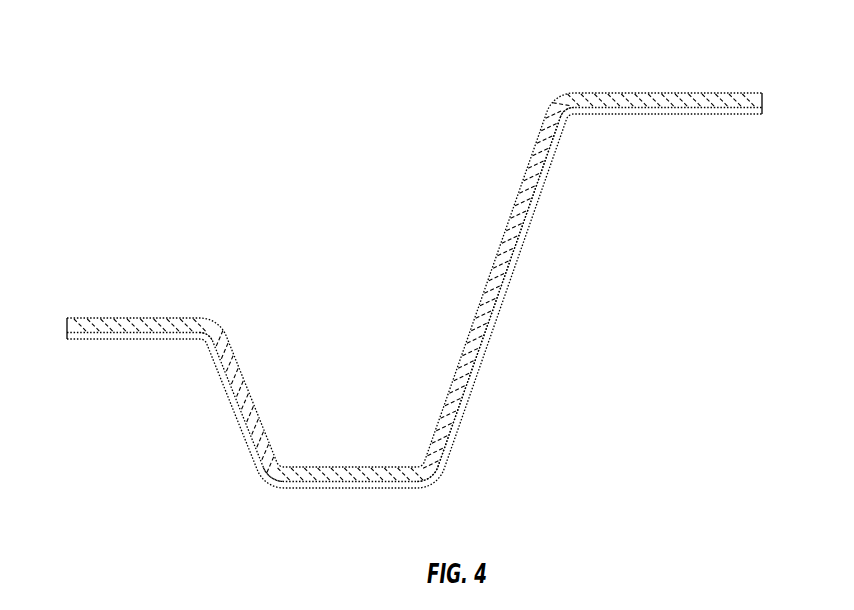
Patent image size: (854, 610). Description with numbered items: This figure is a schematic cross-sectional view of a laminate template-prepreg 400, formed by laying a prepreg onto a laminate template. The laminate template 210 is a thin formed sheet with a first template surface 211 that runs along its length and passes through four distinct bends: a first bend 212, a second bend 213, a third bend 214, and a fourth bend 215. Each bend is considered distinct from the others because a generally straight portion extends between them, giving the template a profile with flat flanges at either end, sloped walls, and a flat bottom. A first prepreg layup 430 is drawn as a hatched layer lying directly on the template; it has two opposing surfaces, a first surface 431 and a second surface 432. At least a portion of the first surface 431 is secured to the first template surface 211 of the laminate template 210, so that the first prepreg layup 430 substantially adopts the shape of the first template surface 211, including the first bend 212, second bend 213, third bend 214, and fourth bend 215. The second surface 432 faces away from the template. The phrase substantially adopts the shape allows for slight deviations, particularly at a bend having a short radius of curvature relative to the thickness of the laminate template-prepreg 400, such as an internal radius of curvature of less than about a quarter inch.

The laminate template-prepreg 400 is at (96, 59).
The laminate template 210 is at (414, 248).
The first template surface 211 is at (527, 212).
The first bend 212 is at (552, 98).
The second bend 213 is at (409, 452).
The third bend 214 is at (285, 454).
The fourth bend 215 is at (227, 320).
The first prepreg layup 430 is at (695, 103).
The first surface 431 is at (747, 116).
The second surface 432 is at (747, 91).